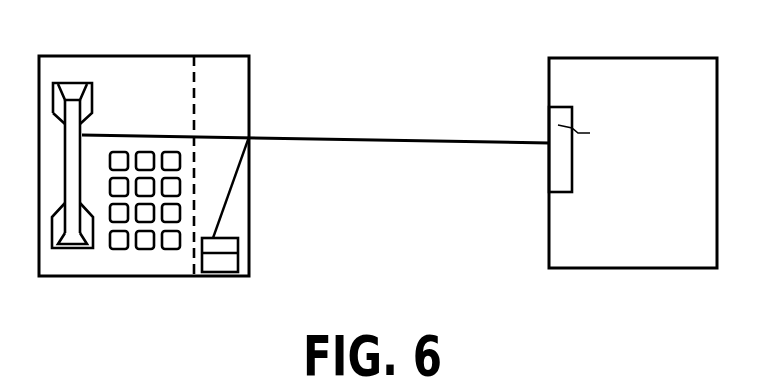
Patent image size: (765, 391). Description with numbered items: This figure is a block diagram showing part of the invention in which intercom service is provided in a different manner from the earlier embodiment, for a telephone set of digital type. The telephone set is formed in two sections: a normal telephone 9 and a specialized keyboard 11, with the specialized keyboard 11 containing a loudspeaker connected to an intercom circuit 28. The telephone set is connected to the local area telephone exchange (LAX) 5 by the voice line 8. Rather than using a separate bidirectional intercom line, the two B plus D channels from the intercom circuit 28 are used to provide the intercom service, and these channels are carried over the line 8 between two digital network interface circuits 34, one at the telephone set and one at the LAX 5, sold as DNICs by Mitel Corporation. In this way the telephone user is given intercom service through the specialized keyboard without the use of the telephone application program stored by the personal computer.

The normal telephone section 9 is at (107, 67).
The specialized keyboard 11 is at (212, 68).
The voice line 8 is at (282, 142).
The intercom circuit 28 is at (223, 264).
The digital network interface circuit 34 is at (230, 245).
The local area telephone exchange (LAX) 5 is at (603, 55).